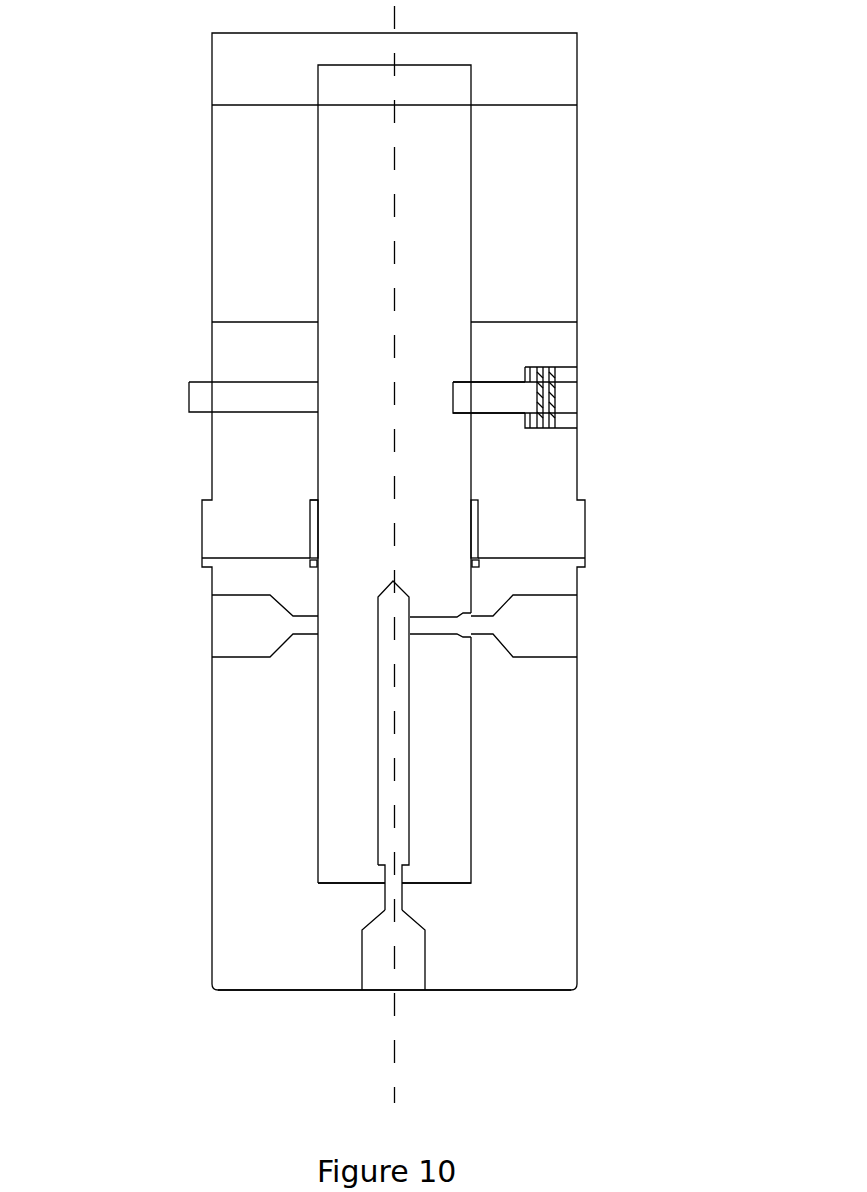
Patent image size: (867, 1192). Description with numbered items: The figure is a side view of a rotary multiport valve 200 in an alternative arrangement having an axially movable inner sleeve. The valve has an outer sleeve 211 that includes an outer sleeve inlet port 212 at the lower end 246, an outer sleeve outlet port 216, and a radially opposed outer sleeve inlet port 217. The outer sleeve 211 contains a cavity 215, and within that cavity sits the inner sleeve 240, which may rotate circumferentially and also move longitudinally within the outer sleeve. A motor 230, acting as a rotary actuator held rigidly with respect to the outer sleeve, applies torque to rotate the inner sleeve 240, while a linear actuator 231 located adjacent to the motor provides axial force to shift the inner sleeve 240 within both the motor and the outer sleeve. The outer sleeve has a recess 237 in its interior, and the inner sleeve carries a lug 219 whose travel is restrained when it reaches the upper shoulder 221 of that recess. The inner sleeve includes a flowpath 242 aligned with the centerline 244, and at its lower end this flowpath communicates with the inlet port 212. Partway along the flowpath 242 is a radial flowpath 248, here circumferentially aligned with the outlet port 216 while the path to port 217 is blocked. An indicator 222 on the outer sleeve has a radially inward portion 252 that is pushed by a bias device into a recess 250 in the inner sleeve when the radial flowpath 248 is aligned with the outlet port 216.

The rotary multiport valve 200 is at (667, 253).
The outer sleeve 211 is at (260, 362).
The outer sleeve inlet port 212 is at (420, 970).
The cavity 215 is at (335, 883).
The outer sleeve outlet port 216 is at (537, 635).
The outer sleeve inlet port 217 is at (240, 642).
The lug 219 is at (202, 558).
The upper shoulder 221 is at (310, 497).
The indicator 222 is at (567, 393).
The motor 230 is at (552, 185).
The linear actuator 231 is at (553, 62).
The recess 237 is at (313, 540).
The inner sleeve 240 is at (441, 490).
The flowpath 242 is at (380, 792).
The centerline 244 is at (390, 205).
The lower end 246 is at (578, 993).
The radial flowpath 248 is at (433, 617).
The recess 250 is at (453, 383).
The radially inward portion 252 is at (452, 412).